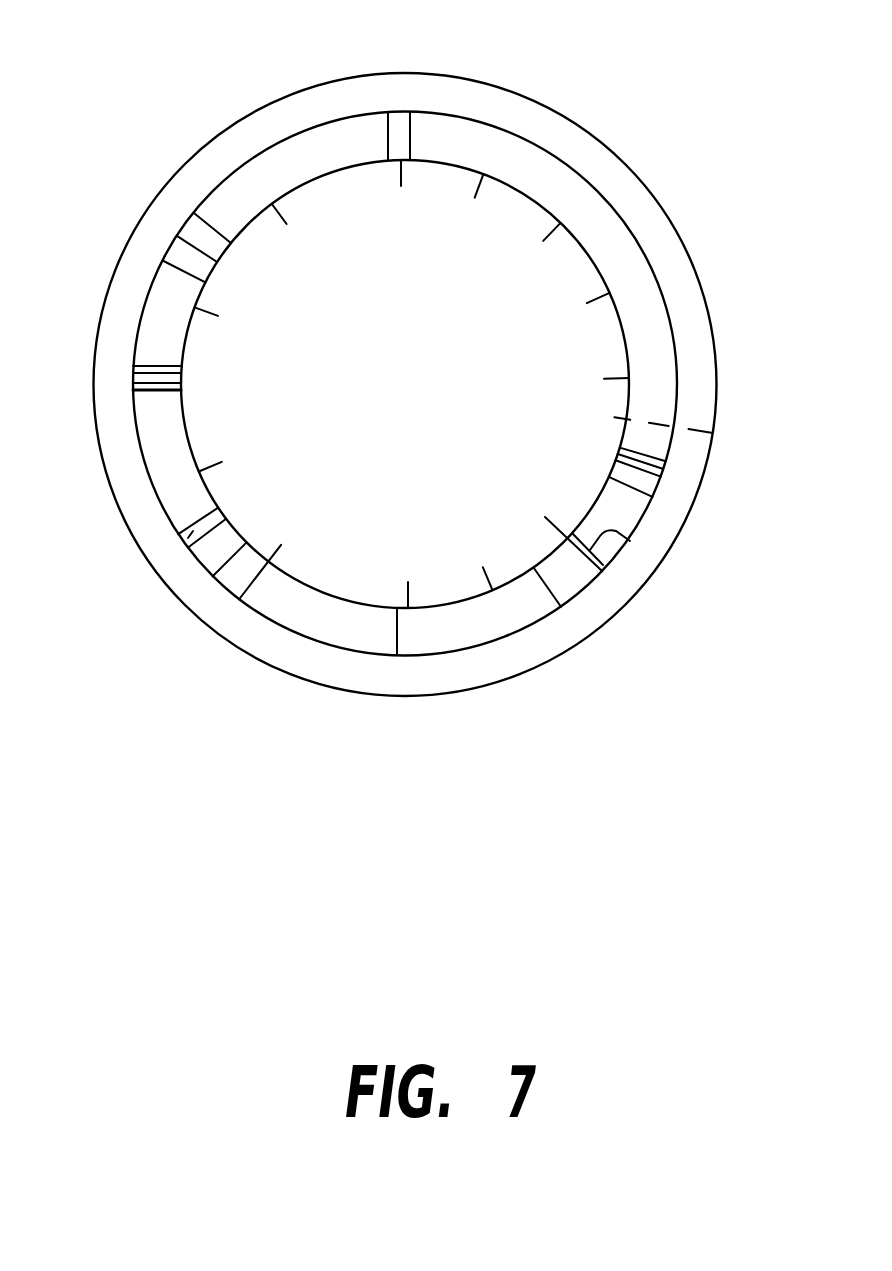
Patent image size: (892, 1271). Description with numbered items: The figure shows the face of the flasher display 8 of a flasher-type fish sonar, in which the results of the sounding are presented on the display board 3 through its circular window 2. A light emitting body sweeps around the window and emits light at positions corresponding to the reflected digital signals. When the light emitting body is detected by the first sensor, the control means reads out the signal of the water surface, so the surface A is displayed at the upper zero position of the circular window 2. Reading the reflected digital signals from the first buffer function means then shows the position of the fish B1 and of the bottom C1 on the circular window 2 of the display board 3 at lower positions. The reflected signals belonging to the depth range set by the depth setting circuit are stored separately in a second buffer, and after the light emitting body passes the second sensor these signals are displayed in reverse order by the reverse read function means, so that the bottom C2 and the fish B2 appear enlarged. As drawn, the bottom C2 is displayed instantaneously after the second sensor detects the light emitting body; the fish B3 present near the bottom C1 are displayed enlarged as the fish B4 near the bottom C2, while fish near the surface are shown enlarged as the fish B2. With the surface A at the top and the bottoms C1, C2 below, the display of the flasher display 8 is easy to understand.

The surface of the water A is at (400, 127).
The circular window 2 is at (260, 173).
The display board 3 is at (572, 270).
The flasher display 8 is at (152, 205).
The fish B1 is at (625, 468).
The fish B2 is at (167, 295).
The fish B3 is at (630, 541).
The fish B4 is at (190, 534).
The bottom C1 is at (558, 560).
The bottom C2 is at (287, 593).